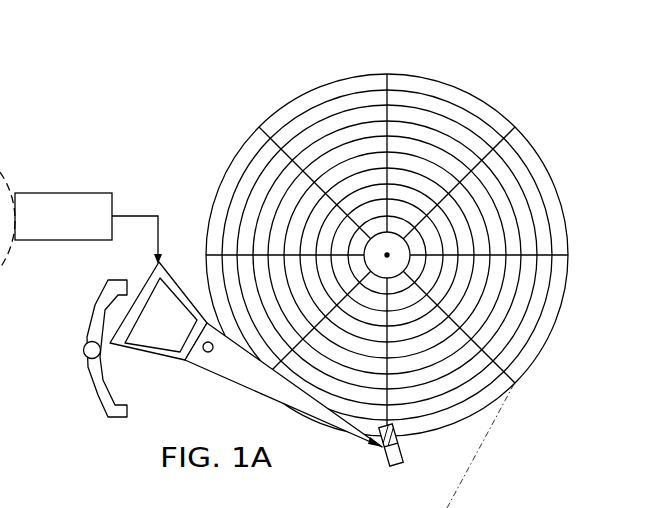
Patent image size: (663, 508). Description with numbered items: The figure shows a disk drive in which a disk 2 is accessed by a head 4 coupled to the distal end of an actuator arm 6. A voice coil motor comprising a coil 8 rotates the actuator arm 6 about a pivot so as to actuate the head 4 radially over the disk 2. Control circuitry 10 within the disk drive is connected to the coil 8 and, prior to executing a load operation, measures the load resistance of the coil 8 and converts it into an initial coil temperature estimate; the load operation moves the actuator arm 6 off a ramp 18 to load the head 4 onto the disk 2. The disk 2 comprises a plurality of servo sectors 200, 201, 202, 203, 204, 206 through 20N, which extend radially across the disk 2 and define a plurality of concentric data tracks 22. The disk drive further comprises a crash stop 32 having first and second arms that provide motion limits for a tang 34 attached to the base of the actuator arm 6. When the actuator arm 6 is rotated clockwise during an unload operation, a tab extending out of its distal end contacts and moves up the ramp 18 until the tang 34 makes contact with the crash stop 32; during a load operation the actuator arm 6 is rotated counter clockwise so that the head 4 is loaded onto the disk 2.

The disk 2 is at (386, 252).
The head 4 is at (366, 456).
The actuator arm 6 is at (205, 368).
The coil 8 is at (152, 366).
The control circuitry 10 is at (62, 193).
The ramp 18 is at (404, 452).
The data tracks 22 is at (548, 198).
The crash stop 32 is at (77, 351).
The tang 34 is at (121, 292).
The servo sector 200 is at (406, 142).
The servo sector 201 is at (479, 179).
The servo sector 202 is at (506, 272).
The servo sector 203 is at (480, 330).
The servo sector 204 is at (428, 364).
The servo sector 206 is at (267, 238).
The servo sector 20N is at (305, 165).